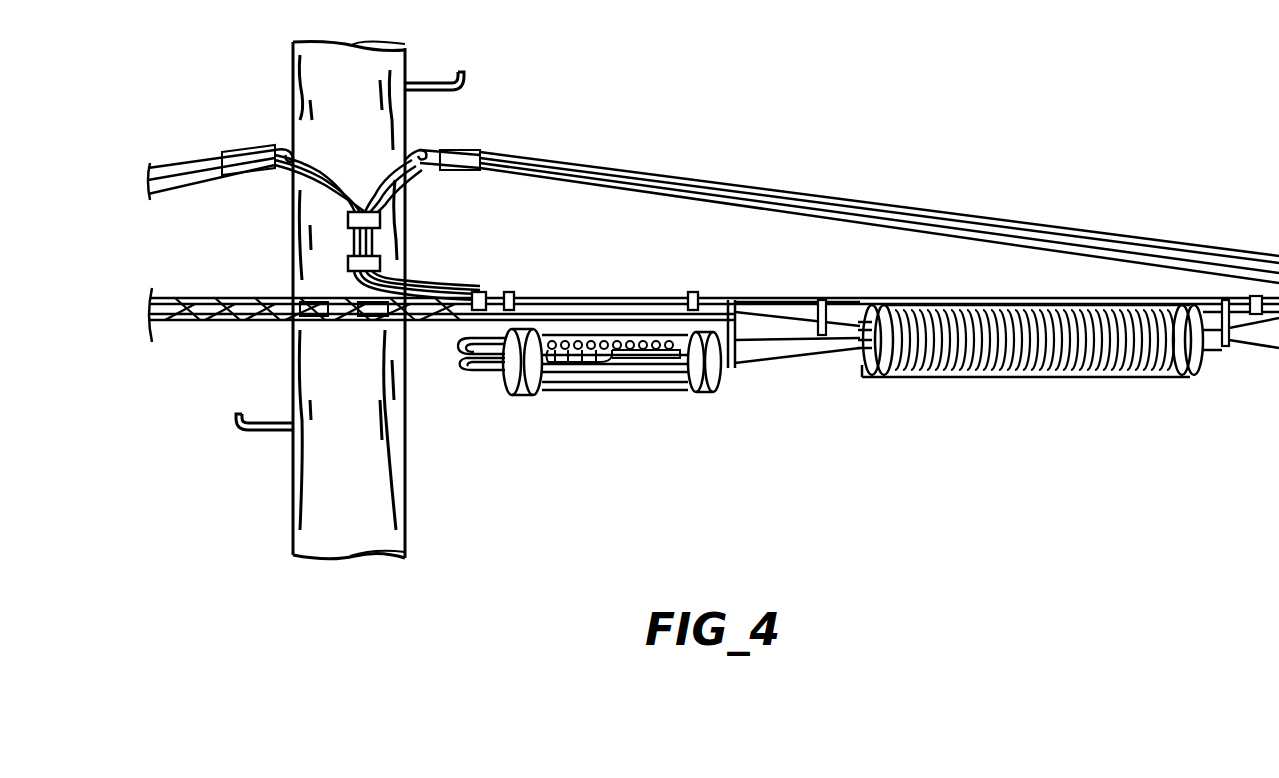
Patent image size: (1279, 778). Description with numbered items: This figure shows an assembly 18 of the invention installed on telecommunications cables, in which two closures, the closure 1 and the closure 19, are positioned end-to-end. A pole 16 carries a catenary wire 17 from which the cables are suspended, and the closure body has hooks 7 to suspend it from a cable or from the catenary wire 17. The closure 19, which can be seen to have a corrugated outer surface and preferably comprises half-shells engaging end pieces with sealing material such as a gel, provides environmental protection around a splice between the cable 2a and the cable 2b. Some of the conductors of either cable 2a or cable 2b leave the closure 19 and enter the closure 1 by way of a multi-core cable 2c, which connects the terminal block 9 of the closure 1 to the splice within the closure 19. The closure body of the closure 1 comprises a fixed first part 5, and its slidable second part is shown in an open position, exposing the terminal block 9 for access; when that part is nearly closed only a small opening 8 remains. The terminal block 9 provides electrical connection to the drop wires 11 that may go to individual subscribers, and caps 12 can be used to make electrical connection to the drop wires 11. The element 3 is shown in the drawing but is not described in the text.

The closure 1 is at (650, 338).
The cable 2a is at (325, 316).
The cable 2b is at (1238, 335).
The multi-core cable 2c is at (832, 345).
The closure housing 3 is at (566, 395).
The fixed first part 5 is at (630, 392).
The hooks 7 is at (508, 290).
The opening 8 is at (683, 393).
The terminal block 9 is at (632, 340).
The drop wires 11 is at (480, 355).
The caps 12 is at (580, 340).
The pole 16 is at (375, 515).
The catenary wire 17 is at (268, 296).
The assembly 18 is at (1032, 344).
The closure 19 is at (964, 310).